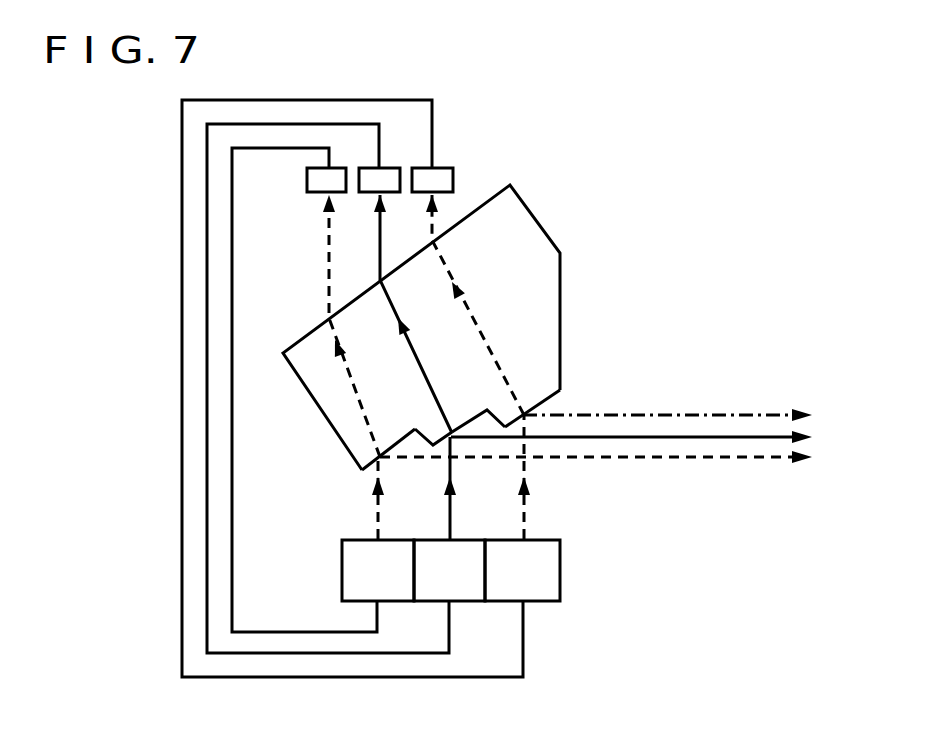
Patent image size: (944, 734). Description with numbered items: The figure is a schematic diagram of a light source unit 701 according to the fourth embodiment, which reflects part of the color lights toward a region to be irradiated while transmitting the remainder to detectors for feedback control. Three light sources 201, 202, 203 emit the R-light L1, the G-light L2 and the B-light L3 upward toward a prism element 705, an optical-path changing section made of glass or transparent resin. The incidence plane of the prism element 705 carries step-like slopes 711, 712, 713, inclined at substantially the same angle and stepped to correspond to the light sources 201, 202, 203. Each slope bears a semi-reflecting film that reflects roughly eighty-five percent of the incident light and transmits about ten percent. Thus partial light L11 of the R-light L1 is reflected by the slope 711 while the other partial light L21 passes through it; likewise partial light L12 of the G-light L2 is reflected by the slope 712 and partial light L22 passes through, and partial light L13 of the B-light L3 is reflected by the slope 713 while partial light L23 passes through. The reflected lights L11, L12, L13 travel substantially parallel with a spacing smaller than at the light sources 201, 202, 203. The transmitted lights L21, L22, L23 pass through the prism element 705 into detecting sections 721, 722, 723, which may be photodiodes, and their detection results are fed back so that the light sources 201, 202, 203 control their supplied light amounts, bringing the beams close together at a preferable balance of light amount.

The light source unit 701 is at (570, 150).
The prism element 705 is at (562, 253).
The slope 711 is at (552, 397).
The slope 712 is at (487, 410).
The slope 713 is at (366, 472).
The detecting section 721 is at (443, 168).
The detecting section 722 is at (390, 168).
The detecting section 723 is at (307, 182).
The light source 201 is at (545, 602).
The light source 202 is at (470, 602).
The light source 203 is at (342, 575).
The R-light L1 is at (526, 512).
The G-light L2 is at (451, 512).
The B-light L3 is at (376, 512).
The partial light L11 is at (637, 413).
The partial light L12 is at (702, 440).
The partial light L13 is at (697, 460).
The partial light L21 is at (450, 274).
The partial light L22 is at (394, 309).
The partial light L23 is at (349, 385).